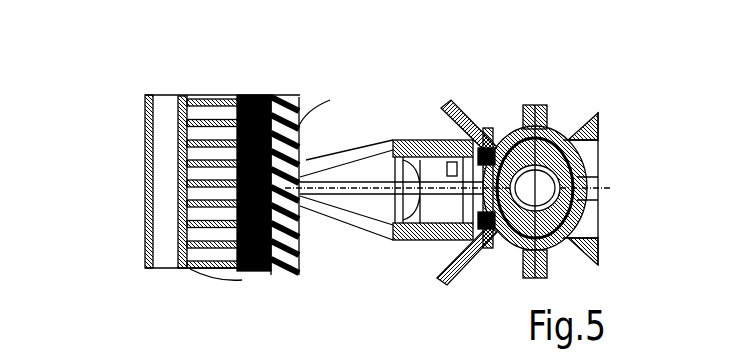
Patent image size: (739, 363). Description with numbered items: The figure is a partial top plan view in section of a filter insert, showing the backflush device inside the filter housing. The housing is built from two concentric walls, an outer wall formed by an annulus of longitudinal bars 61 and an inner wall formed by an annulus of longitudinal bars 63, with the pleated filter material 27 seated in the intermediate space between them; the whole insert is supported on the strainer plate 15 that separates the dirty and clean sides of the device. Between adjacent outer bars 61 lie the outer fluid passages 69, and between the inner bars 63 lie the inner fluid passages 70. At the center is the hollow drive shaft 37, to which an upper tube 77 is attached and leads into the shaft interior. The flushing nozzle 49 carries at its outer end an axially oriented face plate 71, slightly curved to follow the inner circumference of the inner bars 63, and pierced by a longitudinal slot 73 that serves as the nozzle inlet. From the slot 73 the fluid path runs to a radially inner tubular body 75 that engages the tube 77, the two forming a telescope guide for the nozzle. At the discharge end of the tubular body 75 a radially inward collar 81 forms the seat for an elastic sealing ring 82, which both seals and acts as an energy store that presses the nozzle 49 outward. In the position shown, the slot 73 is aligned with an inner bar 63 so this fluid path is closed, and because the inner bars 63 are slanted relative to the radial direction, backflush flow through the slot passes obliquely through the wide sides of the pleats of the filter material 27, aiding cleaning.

The strainer plate 15 is at (150, 96).
The filter material 27 is at (261, 94).
The drive shaft 37 is at (599, 173).
The flushing nozzle 49 is at (385, 138).
The longitudinal bar 61 is at (150, 180).
The longitudinal bar 63 is at (298, 130).
The outer fluid passage 69 is at (203, 108).
The inner fluid passage 70 is at (286, 92).
The face plate 71 is at (303, 170).
The longitudinal slot 73 is at (305, 207).
The tubular body 75 is at (412, 191).
The upper tube 77 is at (433, 139).
The collar 81 is at (454, 169).
The sealing ring 82 is at (494, 126).